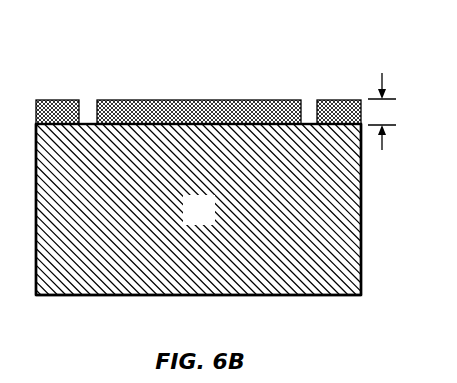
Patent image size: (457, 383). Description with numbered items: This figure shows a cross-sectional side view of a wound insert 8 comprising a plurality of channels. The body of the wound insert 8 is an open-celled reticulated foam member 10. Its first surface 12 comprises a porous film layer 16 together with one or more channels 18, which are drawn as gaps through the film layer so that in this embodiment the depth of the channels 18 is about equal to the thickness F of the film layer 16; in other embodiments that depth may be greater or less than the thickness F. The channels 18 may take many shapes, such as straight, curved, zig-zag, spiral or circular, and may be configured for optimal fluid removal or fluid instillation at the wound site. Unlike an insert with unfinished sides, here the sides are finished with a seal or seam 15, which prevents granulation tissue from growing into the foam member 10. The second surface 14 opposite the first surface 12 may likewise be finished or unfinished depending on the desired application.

The wound insert 8 is at (301, 313).
The open-celled reticulated foam member 10 is at (187, 218).
The first surface 12 is at (154, 58).
The second surface 14 is at (110, 297).
The seal or seam 15 is at (35, 238).
The porous film layer 16 is at (202, 99).
The channels 18 is at (79, 108).
The thickness of film layer F is at (388, 111).